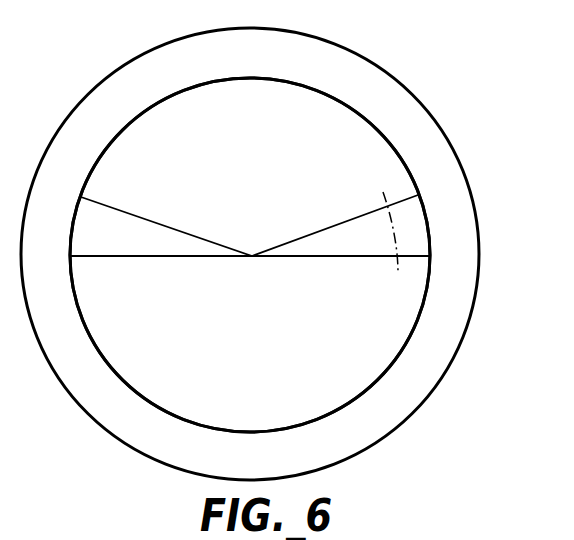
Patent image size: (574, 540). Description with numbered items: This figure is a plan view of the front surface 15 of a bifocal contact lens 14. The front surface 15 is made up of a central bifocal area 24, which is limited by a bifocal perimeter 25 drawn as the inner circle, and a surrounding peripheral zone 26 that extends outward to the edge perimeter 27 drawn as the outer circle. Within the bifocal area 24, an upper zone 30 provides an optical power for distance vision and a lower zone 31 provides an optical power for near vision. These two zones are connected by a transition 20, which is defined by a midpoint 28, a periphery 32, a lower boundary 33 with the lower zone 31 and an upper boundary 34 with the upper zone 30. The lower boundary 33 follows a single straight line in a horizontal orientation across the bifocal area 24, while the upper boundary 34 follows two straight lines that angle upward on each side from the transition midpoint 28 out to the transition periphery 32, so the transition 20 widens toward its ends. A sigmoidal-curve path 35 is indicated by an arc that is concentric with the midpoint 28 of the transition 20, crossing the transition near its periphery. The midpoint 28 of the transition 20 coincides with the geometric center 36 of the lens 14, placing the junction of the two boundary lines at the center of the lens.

The bifocal contact lens 14 is at (366, 52).
The front surface 15 is at (413, 89).
The transition 20 is at (145, 242).
The bifocal area 24 is at (146, 148).
The bifocal perimeter 25 is at (193, 425).
The peripheral zone 26 is at (372, 430).
The edge perimeter 27 is at (442, 378).
The midpoint 28 is at (252, 256).
The upper zone 30 is at (264, 146).
The lower zone 31 is at (266, 378).
The periphery 32 is at (430, 218).
The lower boundary 33 is at (175, 257).
The upper boundary 34 is at (137, 213).
The sigmoidal-curve path 35 is at (392, 229).
The geometric center 36 is at (252, 256).